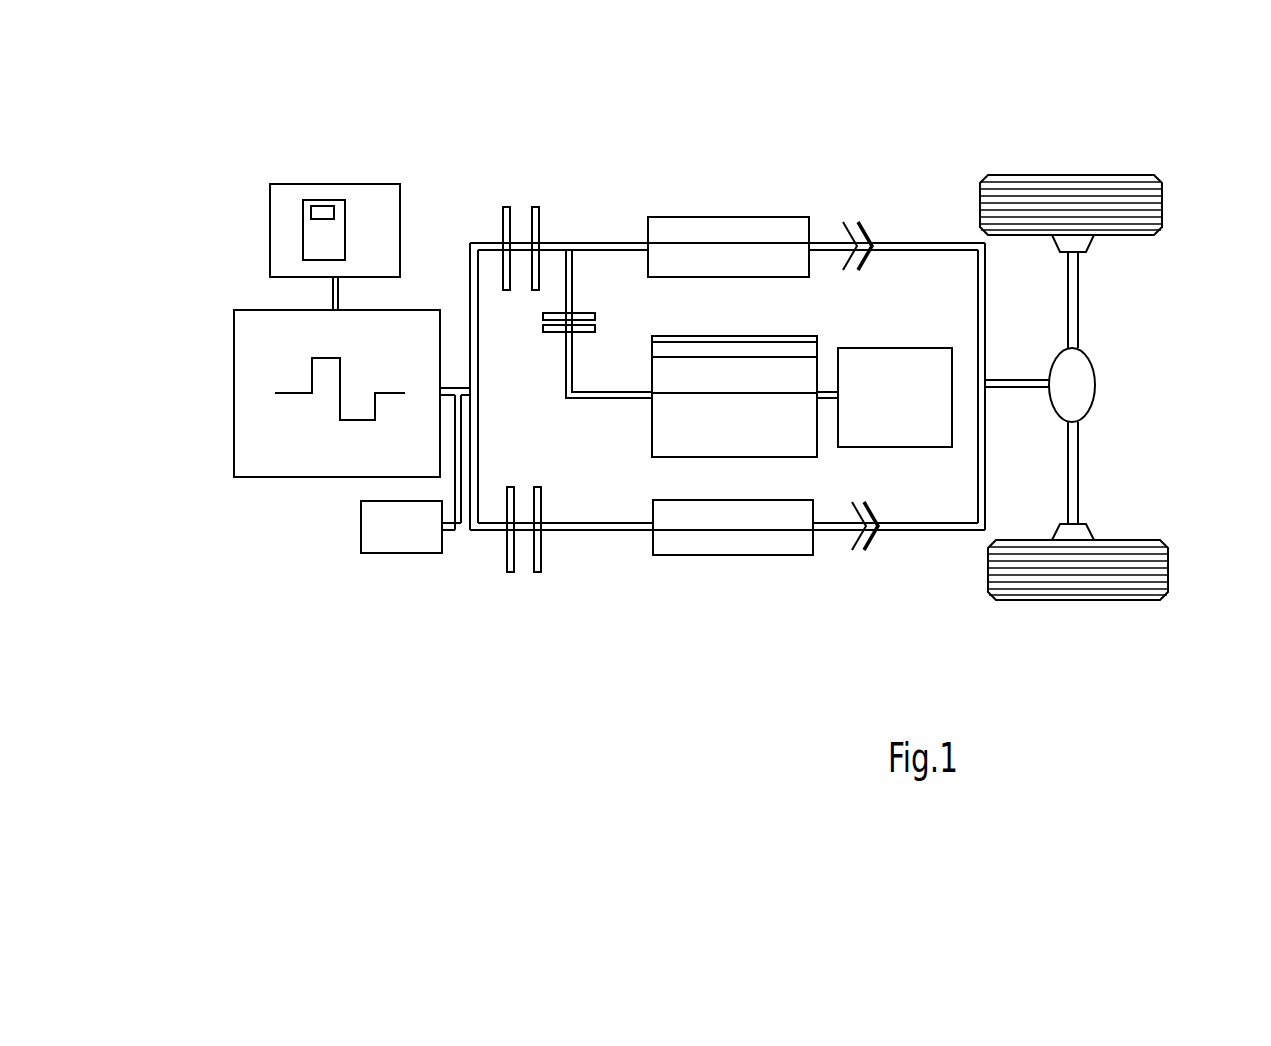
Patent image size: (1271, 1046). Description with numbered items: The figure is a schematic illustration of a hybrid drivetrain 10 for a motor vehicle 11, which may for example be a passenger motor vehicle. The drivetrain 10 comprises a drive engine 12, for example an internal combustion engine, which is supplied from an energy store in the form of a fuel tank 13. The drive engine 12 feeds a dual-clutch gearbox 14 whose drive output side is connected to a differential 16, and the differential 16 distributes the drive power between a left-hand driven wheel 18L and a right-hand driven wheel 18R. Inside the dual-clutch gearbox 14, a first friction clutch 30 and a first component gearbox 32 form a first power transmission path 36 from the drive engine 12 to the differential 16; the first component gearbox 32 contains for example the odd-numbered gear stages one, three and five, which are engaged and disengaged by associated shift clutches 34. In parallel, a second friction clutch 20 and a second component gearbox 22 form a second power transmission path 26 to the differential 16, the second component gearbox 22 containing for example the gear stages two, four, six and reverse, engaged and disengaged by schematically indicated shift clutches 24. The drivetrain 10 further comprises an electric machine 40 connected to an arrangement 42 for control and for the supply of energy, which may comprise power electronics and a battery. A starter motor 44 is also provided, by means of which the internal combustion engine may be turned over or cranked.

The drivetrain 10 is at (955, 164).
The motor vehicle 11 is at (1078, 150).
The drive engine 12 is at (287, 470).
The fuel tank 13 is at (300, 192).
The dual-clutch gearbox 14 is at (826, 175).
The differential 16 is at (1080, 387).
The right-hand driven wheel 18R is at (1121, 220).
The left-hand driven wheel 18L is at (1128, 565).
The second friction clutch 20 is at (540, 226).
The second component gearbox 22 is at (725, 217).
The shift clutches 24 is at (868, 224).
The second power transmission path 26 is at (613, 246).
The first friction clutch 30 is at (506, 540).
The first component gearbox 32 is at (722, 556).
The shift clutches 34 is at (872, 548).
The first power transmission path 36 is at (605, 531).
The electric machine 40 is at (742, 348).
The arrangement for control and for supply of energy 42 is at (880, 378).
The starter motor 44 is at (397, 553).